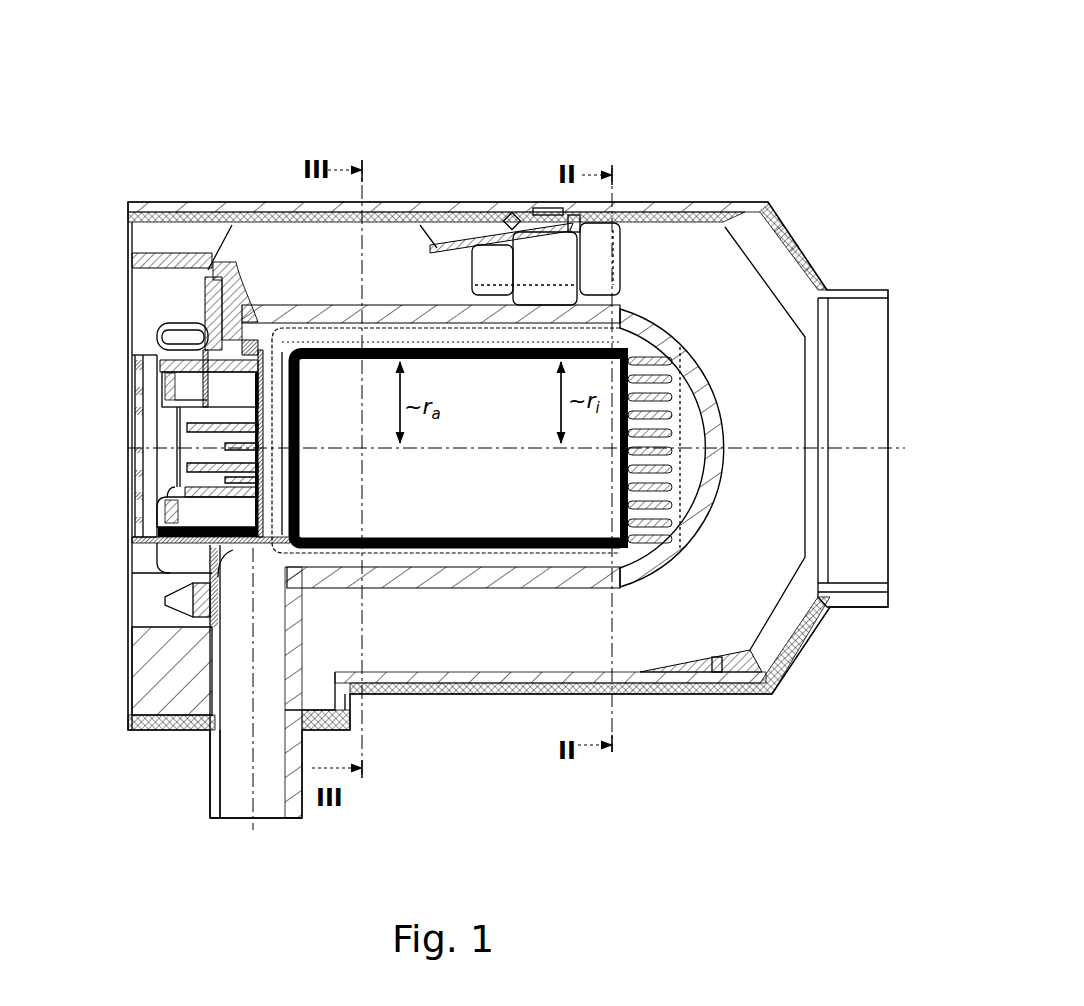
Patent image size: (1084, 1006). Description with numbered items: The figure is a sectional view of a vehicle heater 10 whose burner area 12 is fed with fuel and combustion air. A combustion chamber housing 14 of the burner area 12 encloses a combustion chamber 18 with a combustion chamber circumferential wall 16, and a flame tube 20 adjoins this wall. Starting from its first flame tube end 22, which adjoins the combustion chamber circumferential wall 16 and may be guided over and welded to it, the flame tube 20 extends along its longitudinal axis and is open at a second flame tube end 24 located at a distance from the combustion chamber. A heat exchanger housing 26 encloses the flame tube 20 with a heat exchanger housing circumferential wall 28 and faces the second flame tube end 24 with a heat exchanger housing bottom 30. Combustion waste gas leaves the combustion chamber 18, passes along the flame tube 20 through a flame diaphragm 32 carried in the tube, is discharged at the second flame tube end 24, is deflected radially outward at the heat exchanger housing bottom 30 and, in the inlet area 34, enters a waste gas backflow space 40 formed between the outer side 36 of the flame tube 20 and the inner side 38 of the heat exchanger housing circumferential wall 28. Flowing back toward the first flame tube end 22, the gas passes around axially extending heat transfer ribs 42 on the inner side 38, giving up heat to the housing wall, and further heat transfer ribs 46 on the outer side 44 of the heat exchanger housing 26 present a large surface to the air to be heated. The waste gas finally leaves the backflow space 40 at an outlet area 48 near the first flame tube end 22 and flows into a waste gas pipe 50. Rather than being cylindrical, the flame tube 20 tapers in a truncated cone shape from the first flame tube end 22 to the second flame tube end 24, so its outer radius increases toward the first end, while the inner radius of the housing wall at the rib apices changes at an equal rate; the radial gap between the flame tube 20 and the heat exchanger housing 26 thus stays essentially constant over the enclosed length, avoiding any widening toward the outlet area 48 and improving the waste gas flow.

The vehicle heater 10 is at (690, 130).
The burner area 12 is at (118, 303).
The combustion chamber housing 14 is at (127, 370).
The combustion chamber circumferential wall 16 is at (203, 410).
The combustion chamber 18 is at (205, 503).
The flame tube 20 is at (518, 548).
The first flame tube end 22 is at (253, 336).
The second flame tube end 24 is at (623, 350).
The heat exchanger housing 26 is at (382, 620).
The heat exchanger housing circumferential wall 28 is at (443, 590).
The heat exchanger housing bottom 30 is at (713, 517).
The flame diaphragm 32 is at (250, 527).
The inlet area 34 is at (625, 553).
The outer side of the flame tube 36 is at (603, 556).
The inner side of the heat exchanger housing circumferential wall 38 is at (595, 535).
The waste gas backflow space 40 is at (410, 330).
The heat transfer ribs 42 is at (320, 337).
The outer side of the heat exchanger housing 44 is at (738, 571).
The heat transfer ribs 46 is at (720, 657).
The outlet area 48 is at (262, 572).
The waste gas pipe 50 is at (235, 758).